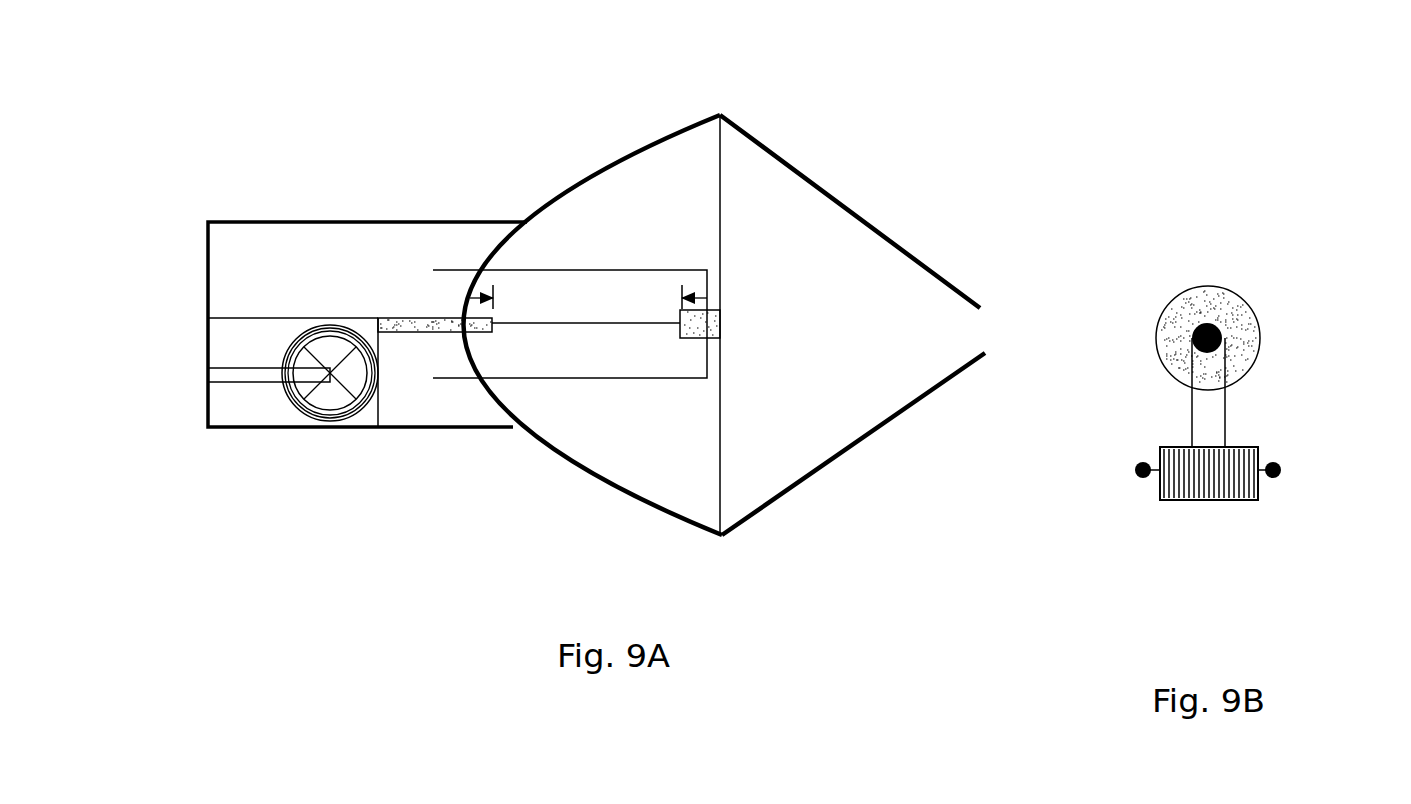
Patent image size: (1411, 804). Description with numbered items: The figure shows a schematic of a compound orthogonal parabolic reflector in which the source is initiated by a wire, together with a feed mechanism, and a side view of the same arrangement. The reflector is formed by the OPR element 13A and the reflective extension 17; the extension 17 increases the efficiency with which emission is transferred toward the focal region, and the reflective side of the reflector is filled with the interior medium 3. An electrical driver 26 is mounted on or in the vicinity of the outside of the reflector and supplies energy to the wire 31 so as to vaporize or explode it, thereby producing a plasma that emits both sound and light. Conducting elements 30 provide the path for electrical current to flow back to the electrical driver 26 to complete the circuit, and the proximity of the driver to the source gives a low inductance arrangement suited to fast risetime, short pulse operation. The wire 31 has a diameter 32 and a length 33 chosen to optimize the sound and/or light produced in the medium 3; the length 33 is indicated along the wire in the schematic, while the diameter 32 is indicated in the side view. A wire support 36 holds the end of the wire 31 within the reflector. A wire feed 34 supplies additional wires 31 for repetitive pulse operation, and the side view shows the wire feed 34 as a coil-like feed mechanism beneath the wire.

In FIG. 9A, the electrical driver 26 is at (295, 218).
In FIG. 9A, the wire feed 34 is at (201, 375).
In FIG. 9B, the wire feed 34 is at (1208, 485).
In FIG. 9A, the wire 31 is at (595, 327).
In FIG. 9A, the conducting elements 30 is at (632, 265).
In FIG. 9A, the length 33 is at (588, 296).
In FIG. 9A, the Wire Support 36 is at (720, 318).
In FIG. 9B, the Wire Support 36 is at (1175, 298).
In FIG. 9A, the OPR element 13A is at (695, 117).
In FIG. 9A, the reflective extension 17 is at (868, 568).
In FIG. 9A, the interior medium 3 is at (825, 325).
In FIG. 9B, the diameter 32 is at (1212, 322).